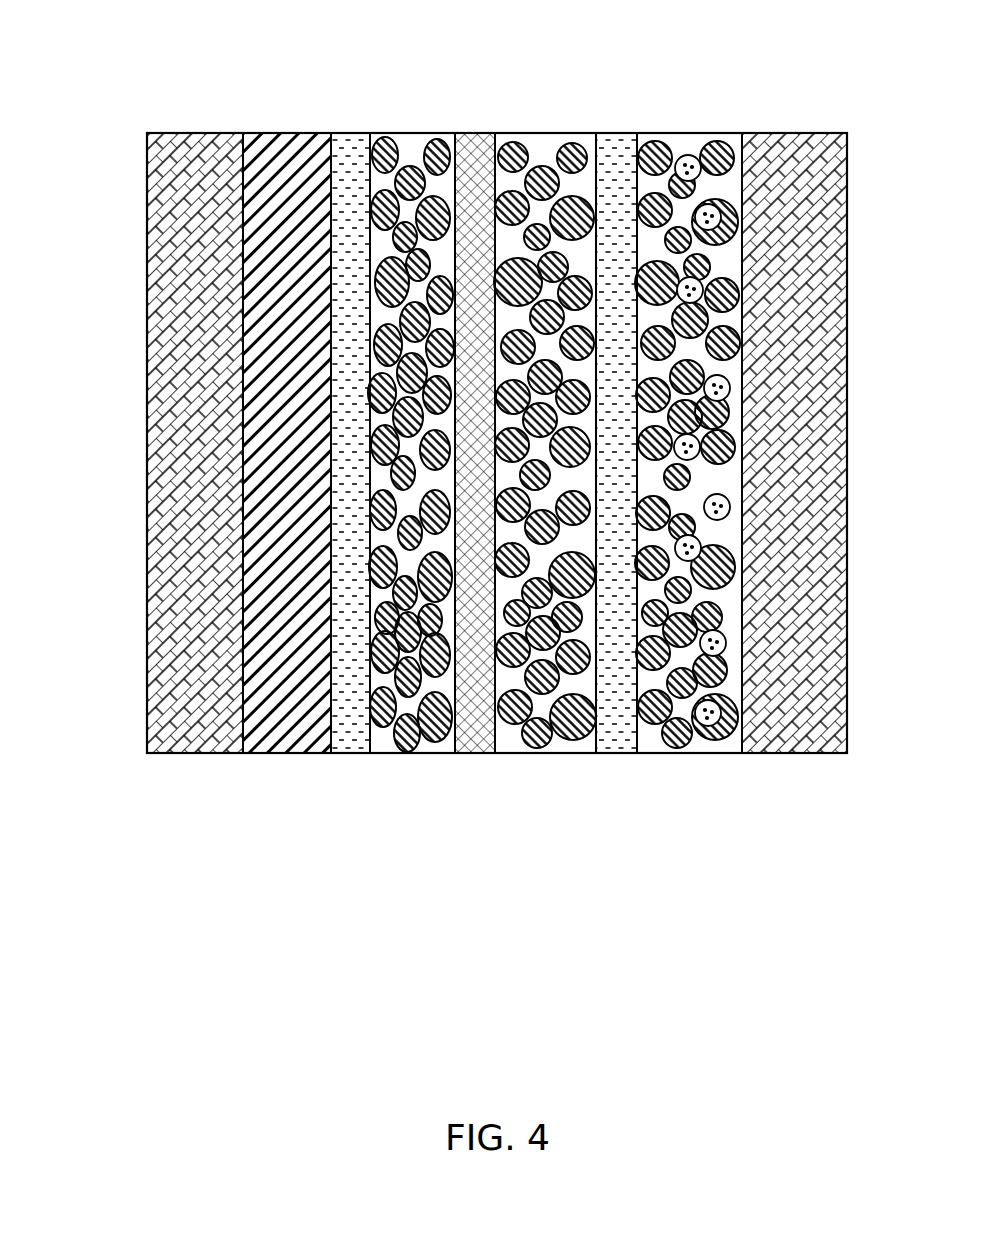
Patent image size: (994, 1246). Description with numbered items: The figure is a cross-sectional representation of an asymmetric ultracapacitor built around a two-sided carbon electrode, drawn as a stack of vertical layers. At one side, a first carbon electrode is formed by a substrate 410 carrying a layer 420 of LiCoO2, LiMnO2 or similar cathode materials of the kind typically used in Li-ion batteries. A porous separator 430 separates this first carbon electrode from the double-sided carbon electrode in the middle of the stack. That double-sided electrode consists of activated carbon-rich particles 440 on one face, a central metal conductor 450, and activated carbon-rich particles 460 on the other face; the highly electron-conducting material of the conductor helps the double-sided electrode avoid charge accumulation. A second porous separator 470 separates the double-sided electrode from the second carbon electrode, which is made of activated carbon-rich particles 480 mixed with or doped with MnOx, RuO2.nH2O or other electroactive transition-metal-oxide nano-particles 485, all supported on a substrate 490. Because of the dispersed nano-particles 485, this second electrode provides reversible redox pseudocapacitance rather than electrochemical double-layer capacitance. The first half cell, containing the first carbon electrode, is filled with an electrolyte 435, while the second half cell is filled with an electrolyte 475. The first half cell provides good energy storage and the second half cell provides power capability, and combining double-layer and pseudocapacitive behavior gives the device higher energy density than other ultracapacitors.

The substrate 410 is at (190, 155).
The layer of cathode material 420 is at (287, 730).
The porous separator 430 is at (348, 140).
The electrolyte 435 is at (398, 150).
The activated carbon-rich particles 440 is at (374, 413).
The metal conductor 450 is at (482, 140).
The activated carbon-rich particles 460 is at (540, 740).
The porous separator 470 is at (622, 148).
The electrolyte 475 is at (540, 140).
The activated carbon-rich particles 480 is at (705, 472).
The electroactive nano-particles 485 is at (715, 735).
The substrate 490 is at (800, 152).